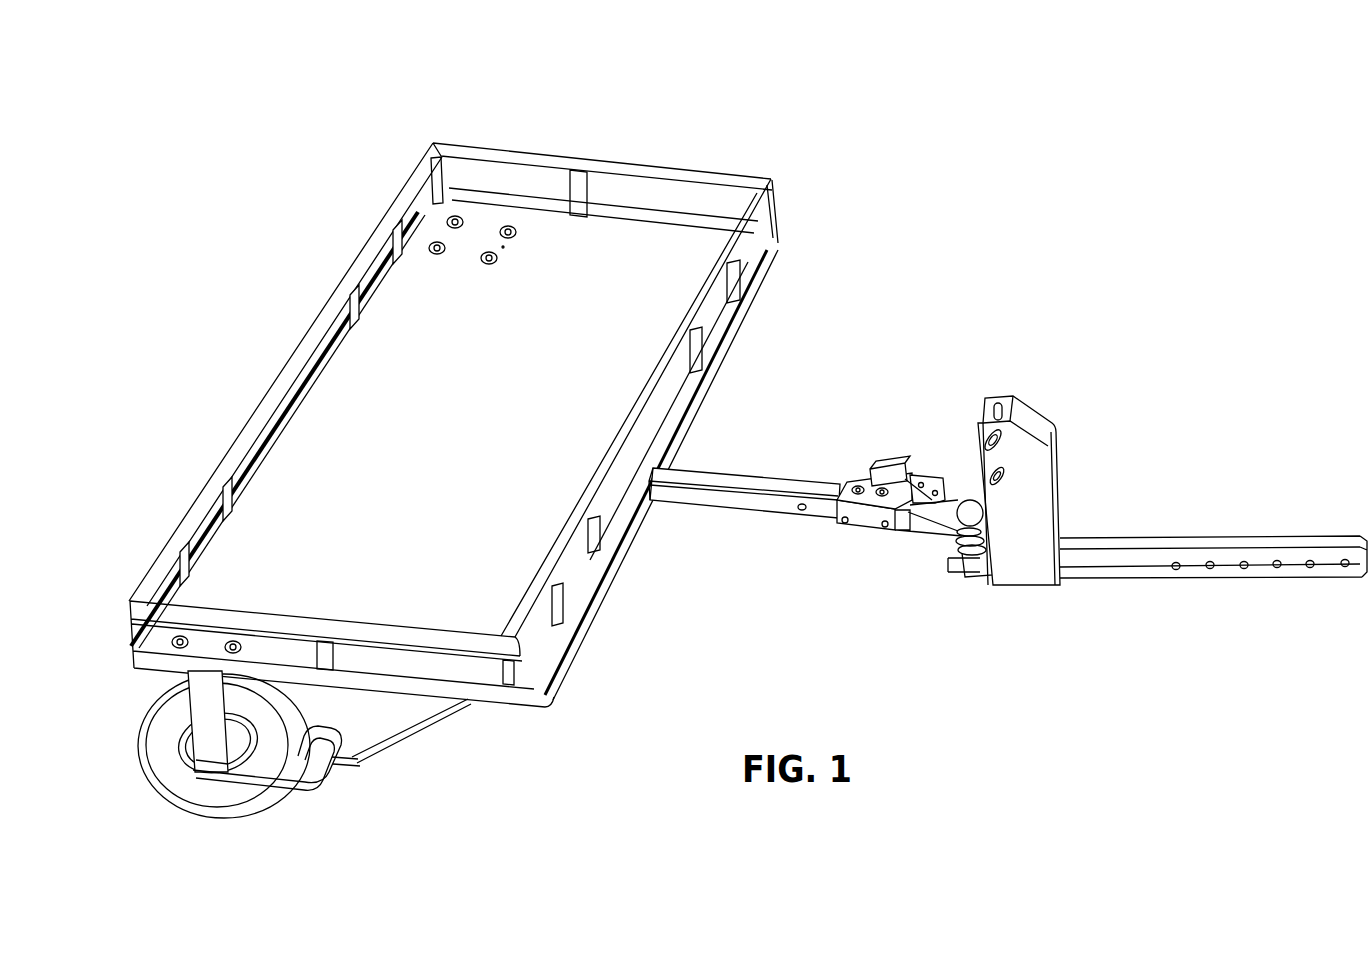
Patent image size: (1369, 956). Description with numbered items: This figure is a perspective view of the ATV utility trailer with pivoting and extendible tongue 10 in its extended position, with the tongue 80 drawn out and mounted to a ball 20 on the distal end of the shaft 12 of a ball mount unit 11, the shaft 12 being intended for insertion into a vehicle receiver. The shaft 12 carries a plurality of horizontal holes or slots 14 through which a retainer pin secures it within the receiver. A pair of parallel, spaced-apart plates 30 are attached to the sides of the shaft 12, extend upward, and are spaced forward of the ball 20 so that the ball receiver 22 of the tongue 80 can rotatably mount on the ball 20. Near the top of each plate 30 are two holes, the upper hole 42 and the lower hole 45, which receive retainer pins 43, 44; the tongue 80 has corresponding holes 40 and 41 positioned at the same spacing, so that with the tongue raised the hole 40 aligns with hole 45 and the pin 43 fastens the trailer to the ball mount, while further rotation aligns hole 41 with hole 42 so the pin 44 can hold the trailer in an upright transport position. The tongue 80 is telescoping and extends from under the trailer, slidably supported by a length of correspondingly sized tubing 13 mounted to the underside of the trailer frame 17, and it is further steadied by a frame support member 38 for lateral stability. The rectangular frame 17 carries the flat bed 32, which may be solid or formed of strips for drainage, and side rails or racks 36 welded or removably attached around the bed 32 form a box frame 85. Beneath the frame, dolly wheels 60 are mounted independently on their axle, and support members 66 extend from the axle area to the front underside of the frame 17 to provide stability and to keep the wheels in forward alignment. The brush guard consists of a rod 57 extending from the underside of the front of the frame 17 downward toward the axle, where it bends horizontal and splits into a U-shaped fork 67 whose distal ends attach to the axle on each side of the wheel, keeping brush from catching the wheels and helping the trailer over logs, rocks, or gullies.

The ATV utility trailer with pivoting and extendible tongue 10 is at (766, 147).
The ball mount unit 11 is at (1083, 532).
The shaft 12 is at (1192, 540).
The tongue support member (tubing) 13 is at (646, 497).
The horizontal holes or slots 14 is at (1177, 571).
The trailer frame 17 is at (782, 231).
The ball 20 is at (953, 549).
The ball receiver 22 is at (973, 506).
The plates (holding members) 30 is at (1048, 414).
The bed 32 is at (469, 386).
The side rails or racks 36 is at (471, 148).
The frame support member 38 is at (720, 373).
The tongue hole 40 is at (886, 528).
The tongue hole 41 is at (843, 522).
The plate hole 42 is at (990, 470).
The retainer pin 43 is at (994, 412).
The retainer pin 44 is at (1005, 476).
The plate hole 45 is at (1037, 412).
The rod (brush guard) 57 is at (457, 712).
The dolly wheels 60 is at (259, 815).
The support members (brush guards) 66 is at (389, 749).
The U-shaped fork 67 is at (318, 783).
The tongue 80 is at (771, 486).
The box frame 85 is at (306, 327).